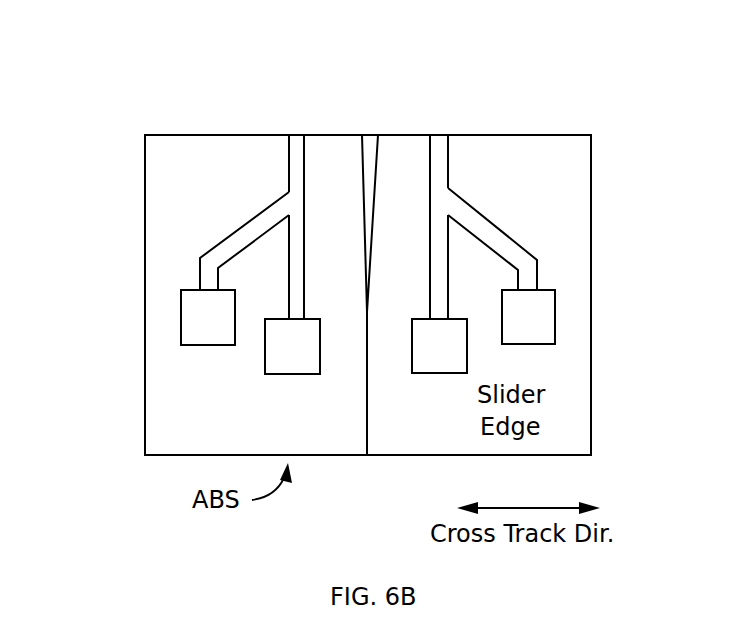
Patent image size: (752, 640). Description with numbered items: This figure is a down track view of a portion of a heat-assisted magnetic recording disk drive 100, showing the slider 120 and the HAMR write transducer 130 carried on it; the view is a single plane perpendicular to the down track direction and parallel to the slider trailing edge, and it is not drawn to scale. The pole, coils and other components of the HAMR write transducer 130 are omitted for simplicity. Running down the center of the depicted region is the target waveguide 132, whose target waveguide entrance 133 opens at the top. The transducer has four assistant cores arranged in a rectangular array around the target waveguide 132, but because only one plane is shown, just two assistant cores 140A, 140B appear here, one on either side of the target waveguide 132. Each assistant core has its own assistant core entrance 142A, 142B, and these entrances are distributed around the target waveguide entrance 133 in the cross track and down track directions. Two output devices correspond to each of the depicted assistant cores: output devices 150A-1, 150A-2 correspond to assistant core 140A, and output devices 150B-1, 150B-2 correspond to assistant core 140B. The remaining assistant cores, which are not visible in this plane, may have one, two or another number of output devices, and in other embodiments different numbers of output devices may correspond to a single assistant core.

The HAMR disk drive 100 is at (412, 40).
The slider 120 is at (408, 250).
The HAMR write transducer 130 is at (591, 148).
The target waveguide entrance 133 is at (367, 112).
The target waveguide 132 is at (367, 383).
The assistant core entrance 142A is at (294, 112).
The assistant core entrance 142B is at (449, 108).
The assistant core 140A is at (289, 172).
The assistant core 140B is at (448, 170).
The output device 150A-1 is at (265, 365).
The output device 150A-2 is at (181, 313).
The output device 150B-1 is at (467, 367).
The output device 150B-2 is at (555, 313).